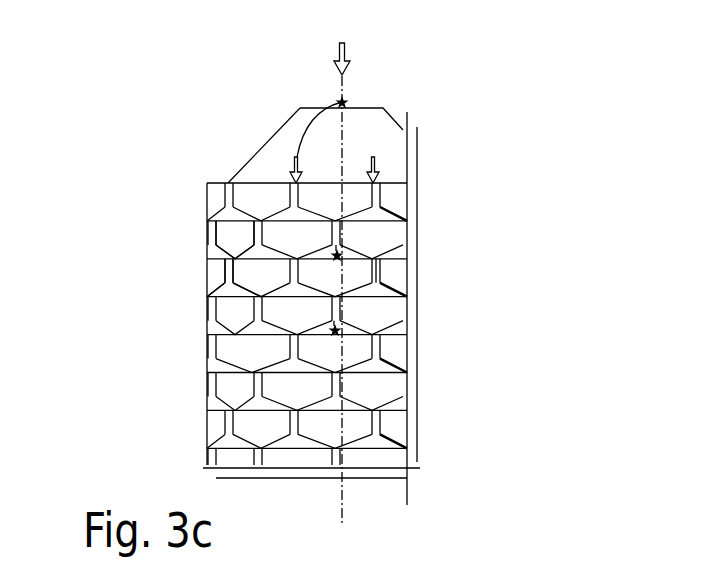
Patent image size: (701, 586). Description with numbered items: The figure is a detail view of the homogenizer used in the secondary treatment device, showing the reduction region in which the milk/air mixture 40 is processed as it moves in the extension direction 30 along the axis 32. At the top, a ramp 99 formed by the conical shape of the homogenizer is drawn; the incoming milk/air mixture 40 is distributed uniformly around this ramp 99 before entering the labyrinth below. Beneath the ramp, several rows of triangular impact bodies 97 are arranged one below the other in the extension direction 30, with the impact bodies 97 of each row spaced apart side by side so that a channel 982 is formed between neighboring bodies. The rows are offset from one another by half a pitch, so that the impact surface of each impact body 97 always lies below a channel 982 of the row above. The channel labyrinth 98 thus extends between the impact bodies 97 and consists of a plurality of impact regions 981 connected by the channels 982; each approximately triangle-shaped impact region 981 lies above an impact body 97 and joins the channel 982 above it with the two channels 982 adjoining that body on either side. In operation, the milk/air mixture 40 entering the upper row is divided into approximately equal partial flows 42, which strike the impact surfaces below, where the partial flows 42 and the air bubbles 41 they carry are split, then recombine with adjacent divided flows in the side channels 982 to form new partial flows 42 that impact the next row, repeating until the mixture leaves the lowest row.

The extension direction 30 is at (347, 50).
The milk/air mixture 40 is at (308, 133).
The air bubbles 41 is at (344, 253).
The partial flows 42 is at (373, 280).
The impact bodies 97 is at (230, 240).
The channel labyrinth 98 is at (236, 290).
The impact region 981 is at (259, 332).
The channel 982 is at (377, 350).
The ramp 99 is at (262, 148).
The axis 32 is at (338, 521).